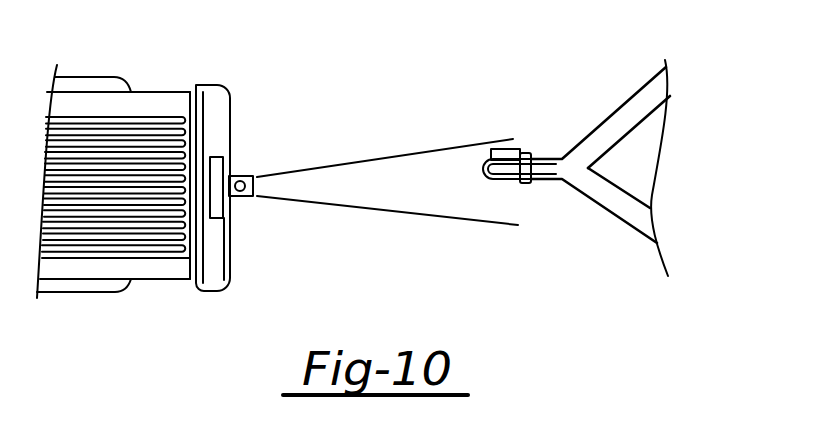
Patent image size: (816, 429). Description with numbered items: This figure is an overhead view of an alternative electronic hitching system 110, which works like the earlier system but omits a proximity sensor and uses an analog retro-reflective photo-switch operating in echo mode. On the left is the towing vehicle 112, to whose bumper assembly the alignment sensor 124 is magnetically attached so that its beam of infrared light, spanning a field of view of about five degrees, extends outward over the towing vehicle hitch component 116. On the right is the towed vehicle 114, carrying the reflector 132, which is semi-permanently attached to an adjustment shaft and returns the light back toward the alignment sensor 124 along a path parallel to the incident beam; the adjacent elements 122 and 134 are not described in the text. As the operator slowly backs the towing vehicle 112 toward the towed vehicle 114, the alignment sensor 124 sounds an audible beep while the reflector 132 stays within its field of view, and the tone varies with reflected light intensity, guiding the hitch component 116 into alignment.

The electronic hitching system 110 is at (342, 72).
The towing vehicle 112 is at (140, 92).
The towed vehicle 114 is at (633, 232).
The towing vehicle hitch component 116 is at (242, 198).
The hook rod 122 is at (566, 152).
The alignment sensor 124 is at (230, 155).
The reflector 132 is at (534, 180).
The clamp 134 is at (517, 148).